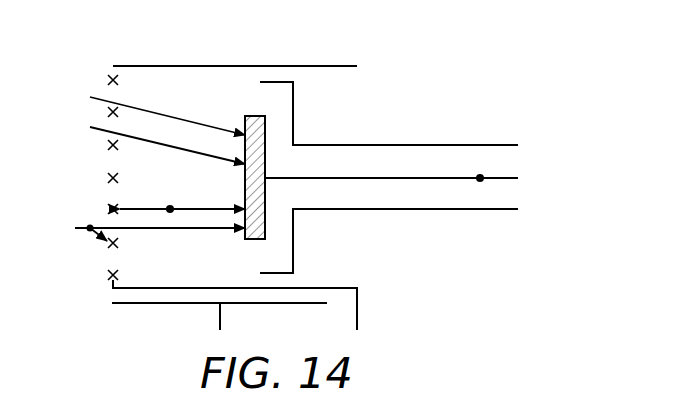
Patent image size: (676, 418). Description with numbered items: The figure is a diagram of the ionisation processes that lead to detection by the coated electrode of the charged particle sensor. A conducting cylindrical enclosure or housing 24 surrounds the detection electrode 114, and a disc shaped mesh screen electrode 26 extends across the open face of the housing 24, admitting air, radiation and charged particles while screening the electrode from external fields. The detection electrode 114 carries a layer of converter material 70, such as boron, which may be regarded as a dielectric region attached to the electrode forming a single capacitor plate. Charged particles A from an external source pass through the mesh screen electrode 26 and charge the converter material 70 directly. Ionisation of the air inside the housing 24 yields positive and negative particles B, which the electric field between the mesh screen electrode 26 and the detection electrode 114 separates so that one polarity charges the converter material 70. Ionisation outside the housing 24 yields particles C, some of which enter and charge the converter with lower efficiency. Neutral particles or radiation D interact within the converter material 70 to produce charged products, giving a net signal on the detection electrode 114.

The cylindrical enclosure or housing 24 is at (170, 66).
The mesh screen electrode 26 is at (105, 79).
The converter material layer 70 is at (254, 116).
The detection electrode 114 is at (268, 228).
The charged particles from external source A is at (159, 109).
The charged particles from ionisation inside housing B is at (168, 206).
The charged particles from ionisation outside housing C is at (89, 227).
The neutral particle or radiation D is at (159, 139).